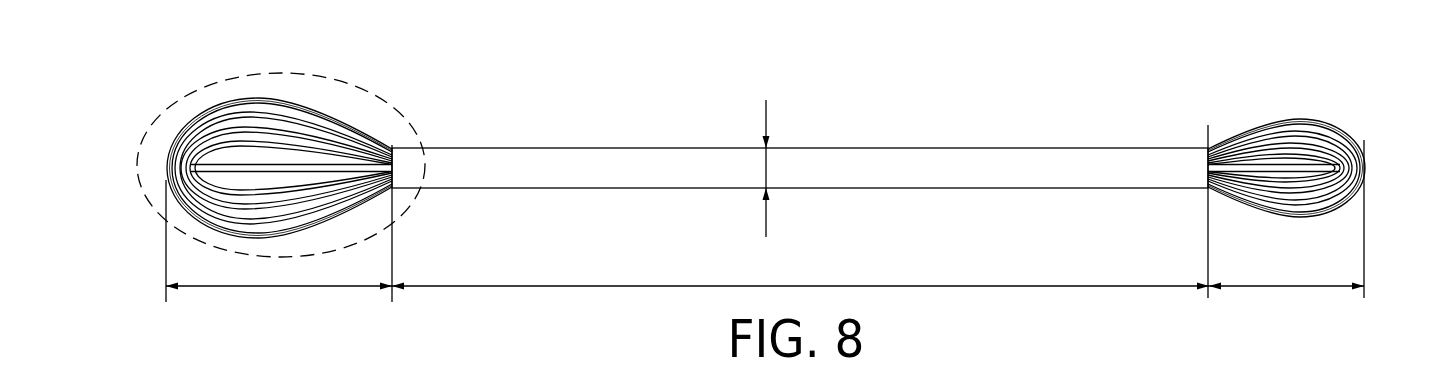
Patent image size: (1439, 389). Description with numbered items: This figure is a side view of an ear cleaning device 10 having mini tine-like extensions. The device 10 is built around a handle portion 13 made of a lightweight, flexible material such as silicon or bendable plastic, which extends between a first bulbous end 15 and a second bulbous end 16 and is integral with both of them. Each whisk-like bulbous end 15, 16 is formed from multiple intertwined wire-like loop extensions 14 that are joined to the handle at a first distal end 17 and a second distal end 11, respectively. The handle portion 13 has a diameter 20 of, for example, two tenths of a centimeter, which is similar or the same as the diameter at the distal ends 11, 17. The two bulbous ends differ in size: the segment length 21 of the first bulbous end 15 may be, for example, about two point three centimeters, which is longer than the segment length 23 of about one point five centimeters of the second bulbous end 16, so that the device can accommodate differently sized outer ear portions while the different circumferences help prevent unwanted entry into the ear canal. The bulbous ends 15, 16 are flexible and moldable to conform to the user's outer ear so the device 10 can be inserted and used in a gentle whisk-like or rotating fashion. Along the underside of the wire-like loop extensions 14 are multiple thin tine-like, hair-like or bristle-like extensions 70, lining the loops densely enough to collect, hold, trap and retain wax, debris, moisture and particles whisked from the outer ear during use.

The ear cleaning device 10 is at (848, 139).
The second distal end 11 is at (1208, 127).
The handle portion 13 is at (968, 147).
The intertwined wire-like loop extensions 14 is at (323, 148).
The first bulbous end 15 is at (134, 213).
The second bulbous end 16 is at (1371, 131).
The first distal end 17 is at (397, 148).
The diameter 20 is at (765, 172).
The segment length 21 is at (278, 288).
The segment length 23 is at (1287, 289).
The tine-like extensions 70 is at (257, 100).